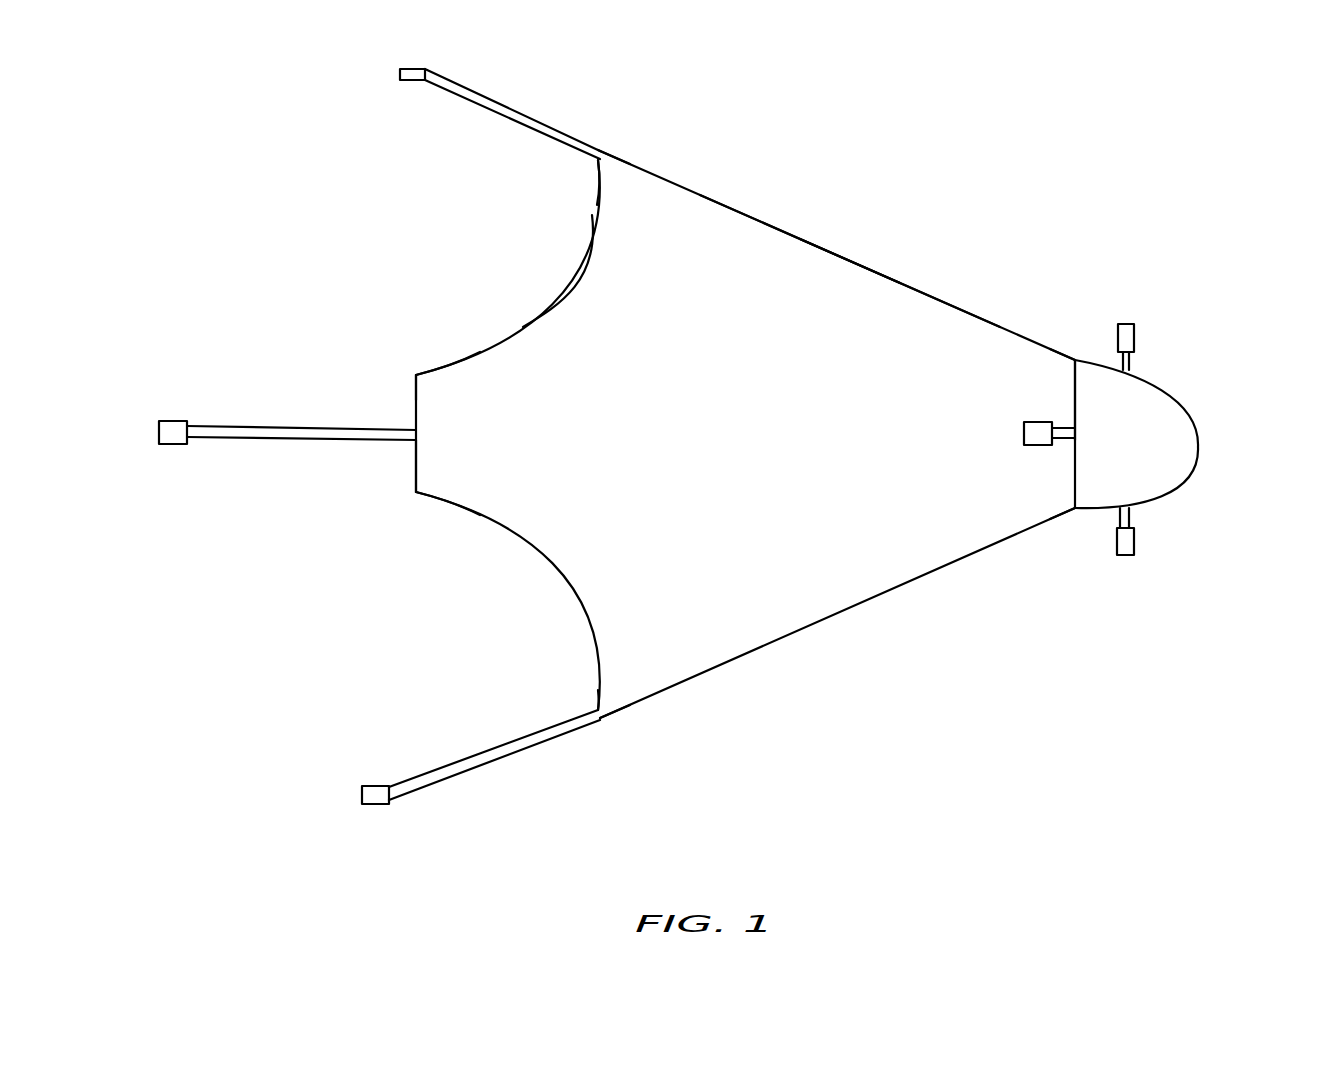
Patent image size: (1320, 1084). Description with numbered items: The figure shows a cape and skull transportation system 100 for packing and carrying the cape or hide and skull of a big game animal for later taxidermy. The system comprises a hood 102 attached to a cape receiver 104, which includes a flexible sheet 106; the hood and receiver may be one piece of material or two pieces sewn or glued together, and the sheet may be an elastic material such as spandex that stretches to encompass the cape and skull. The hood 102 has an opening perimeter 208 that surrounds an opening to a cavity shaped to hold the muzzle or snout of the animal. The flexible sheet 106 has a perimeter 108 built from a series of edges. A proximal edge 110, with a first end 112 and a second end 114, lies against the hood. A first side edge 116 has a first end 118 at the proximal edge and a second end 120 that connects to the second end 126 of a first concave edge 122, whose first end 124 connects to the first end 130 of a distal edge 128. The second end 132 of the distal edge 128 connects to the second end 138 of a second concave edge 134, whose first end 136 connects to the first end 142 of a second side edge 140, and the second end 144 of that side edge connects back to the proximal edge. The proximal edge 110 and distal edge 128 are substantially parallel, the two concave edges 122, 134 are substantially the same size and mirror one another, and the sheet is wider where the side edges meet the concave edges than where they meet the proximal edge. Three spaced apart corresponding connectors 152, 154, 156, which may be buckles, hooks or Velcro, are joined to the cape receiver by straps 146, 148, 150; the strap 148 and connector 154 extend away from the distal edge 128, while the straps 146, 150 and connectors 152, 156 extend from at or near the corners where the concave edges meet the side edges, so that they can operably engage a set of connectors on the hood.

The cape and skull transportation system 100 is at (698, 470).
The hood 102 is at (1150, 403).
The cape receiver 104 is at (753, 257).
The flexible sheet 106 is at (838, 297).
The perimeter 108 is at (523, 327).
The proximal edge 110 is at (1073, 475).
The first end of proximal edge 112 is at (1090, 510).
The second end of proximal edge 114 is at (1087, 363).
The first side edge 116 is at (855, 610).
The first end of first side edge 118 is at (1075, 510).
The second end of first side edge 120 is at (603, 722).
The first concave edge 122 is at (572, 582).
The first end of first concave edge 124 is at (418, 492).
The second end of first concave edge 126 is at (603, 713).
The distal edge 128 is at (417, 396).
The first end of distal edge 130 is at (417, 490).
The second end of distal edge 132 is at (417, 380).
The second concave edge 134 is at (558, 303).
The first end of second concave edge 136 is at (600, 162).
The second end of second concave edge 138 is at (416, 375).
The second side edge 140 is at (798, 238).
The first end of second side edge 142 is at (603, 157).
The second end of second side edge 144 is at (1075, 362).
The strap 146 is at (513, 107).
The strap 148 is at (270, 425).
The strap 150 is at (495, 762).
The corresponding connector 152 is at (412, 82).
The corresponding connector 154 is at (173, 420).
The corresponding connector 156 is at (373, 805).
The opening perimeter 208 is at (1073, 380).